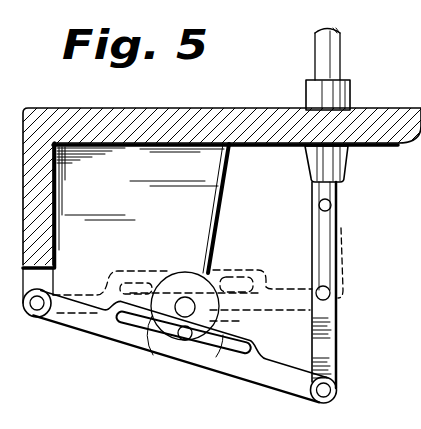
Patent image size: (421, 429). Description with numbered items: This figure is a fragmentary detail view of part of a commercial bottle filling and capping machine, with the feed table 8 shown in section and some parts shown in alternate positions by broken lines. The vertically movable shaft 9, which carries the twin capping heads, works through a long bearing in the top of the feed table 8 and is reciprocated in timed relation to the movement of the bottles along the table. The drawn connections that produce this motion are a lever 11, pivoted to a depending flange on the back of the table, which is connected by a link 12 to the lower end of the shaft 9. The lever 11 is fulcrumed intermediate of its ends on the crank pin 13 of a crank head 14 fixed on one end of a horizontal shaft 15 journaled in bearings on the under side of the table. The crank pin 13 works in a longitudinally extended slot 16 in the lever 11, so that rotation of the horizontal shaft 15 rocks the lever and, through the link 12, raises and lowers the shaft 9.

The feed table 8 is at (265, 122).
The vertically movable shaft 9 is at (339, 53).
The lever 11 is at (143, 336).
The link 12 is at (345, 271).
The crank pin 13 is at (184, 244).
The crank head 14 is at (202, 288).
The horizontal shaft 15 is at (242, 321).
The longitudinally extended slot 16 is at (219, 348).